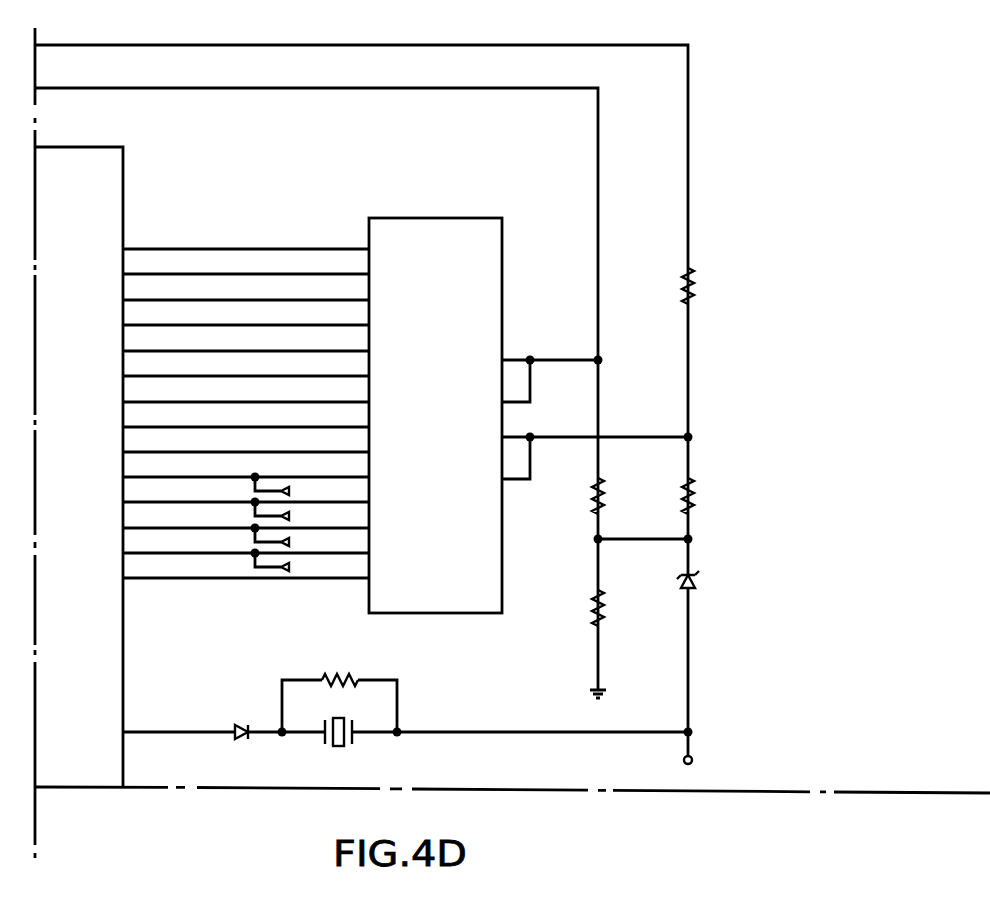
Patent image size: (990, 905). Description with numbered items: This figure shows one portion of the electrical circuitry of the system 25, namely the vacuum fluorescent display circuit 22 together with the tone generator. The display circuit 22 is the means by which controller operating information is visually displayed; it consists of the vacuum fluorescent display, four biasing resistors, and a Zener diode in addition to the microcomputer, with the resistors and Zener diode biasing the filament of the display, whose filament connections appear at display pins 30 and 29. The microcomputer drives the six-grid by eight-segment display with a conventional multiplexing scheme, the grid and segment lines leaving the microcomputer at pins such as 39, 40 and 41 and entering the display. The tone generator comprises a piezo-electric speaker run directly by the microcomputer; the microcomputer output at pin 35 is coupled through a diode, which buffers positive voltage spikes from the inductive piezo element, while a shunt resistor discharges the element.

The vacuum fluorescent display circuit 22 is at (502, 268).
The system 25 is at (796, 92).
The display filament pin 30 is at (595, 427).
The display filament pin 29 is at (516, 458).
The microcontroller pin 35 is at (179, 722).
The microcontroller pin 39 is at (246, 442).
The microcontroller pin 40 is at (246, 467).
The microcontroller pin 41 is at (246, 492).